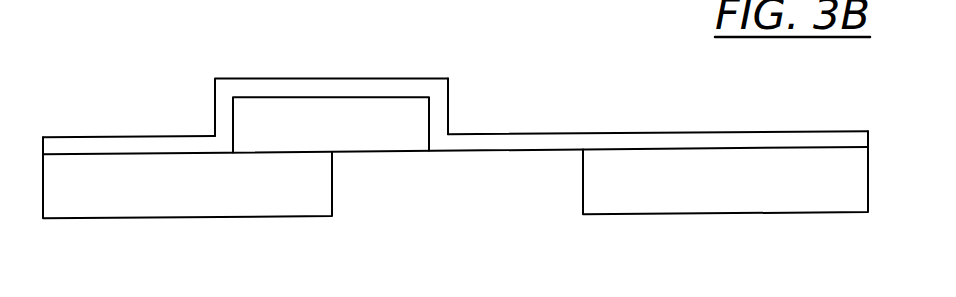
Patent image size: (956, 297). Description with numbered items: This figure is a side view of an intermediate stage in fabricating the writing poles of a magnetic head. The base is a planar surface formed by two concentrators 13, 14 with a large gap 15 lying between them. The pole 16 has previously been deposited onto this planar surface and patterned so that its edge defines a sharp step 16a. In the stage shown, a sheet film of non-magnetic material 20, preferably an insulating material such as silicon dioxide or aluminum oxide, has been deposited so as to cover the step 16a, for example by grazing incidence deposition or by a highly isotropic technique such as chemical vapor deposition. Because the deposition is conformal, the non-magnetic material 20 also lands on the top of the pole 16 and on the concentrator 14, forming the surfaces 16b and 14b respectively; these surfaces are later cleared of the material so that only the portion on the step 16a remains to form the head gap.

The concentrator 13 is at (160, 188).
The concentrator 14 is at (738, 178).
The surface of concentrator 14b is at (800, 130).
The large gap 15 is at (441, 181).
The pole 16 is at (252, 126).
The step 16a is at (450, 105).
The surface of pole 16b is at (322, 78).
The non-magnetic material 20 is at (623, 142).